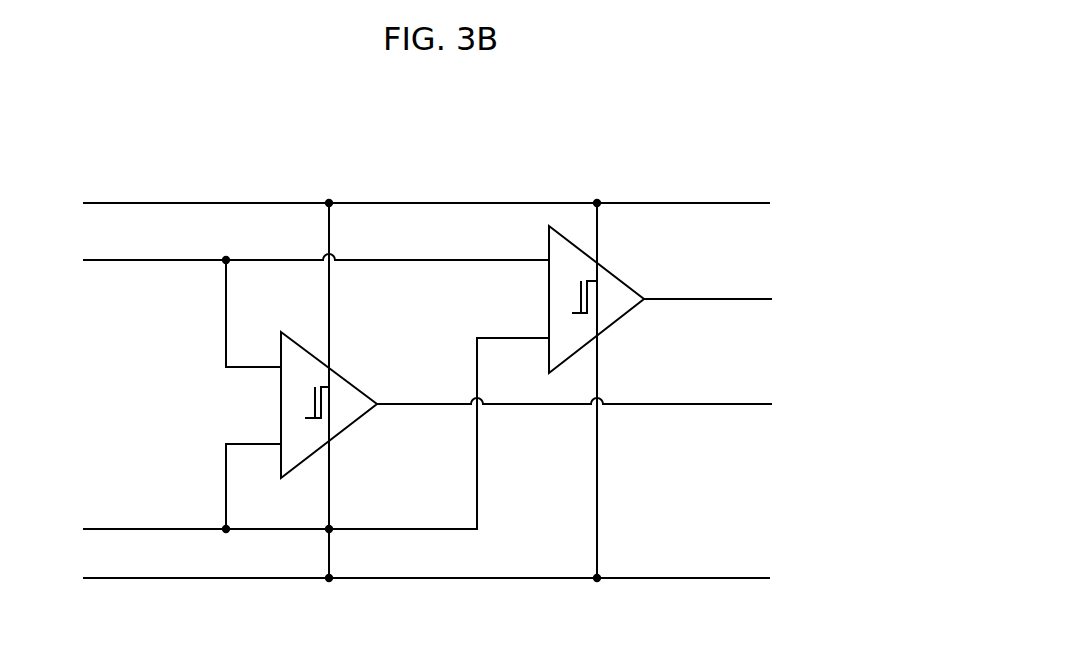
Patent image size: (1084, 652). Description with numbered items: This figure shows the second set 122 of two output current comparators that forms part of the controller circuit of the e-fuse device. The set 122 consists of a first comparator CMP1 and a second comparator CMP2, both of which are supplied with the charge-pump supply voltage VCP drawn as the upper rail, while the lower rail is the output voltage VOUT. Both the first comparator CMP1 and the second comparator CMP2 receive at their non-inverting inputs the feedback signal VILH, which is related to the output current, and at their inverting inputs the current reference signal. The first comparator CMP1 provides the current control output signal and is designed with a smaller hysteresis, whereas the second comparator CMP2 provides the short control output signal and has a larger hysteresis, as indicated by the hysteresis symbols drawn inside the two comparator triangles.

The second set of output current comparators 122 is at (567, 167).
The first comparator ICMP1 CMP1 is at (349, 391).
The second comparator ICMP2 CMP2 is at (622, 292).
The charge-pump supply voltage VCP is at (452, 203).
The output voltage rail VOUT is at (383, 580).
The feedback signal related to the output current VILH is at (132, 261).